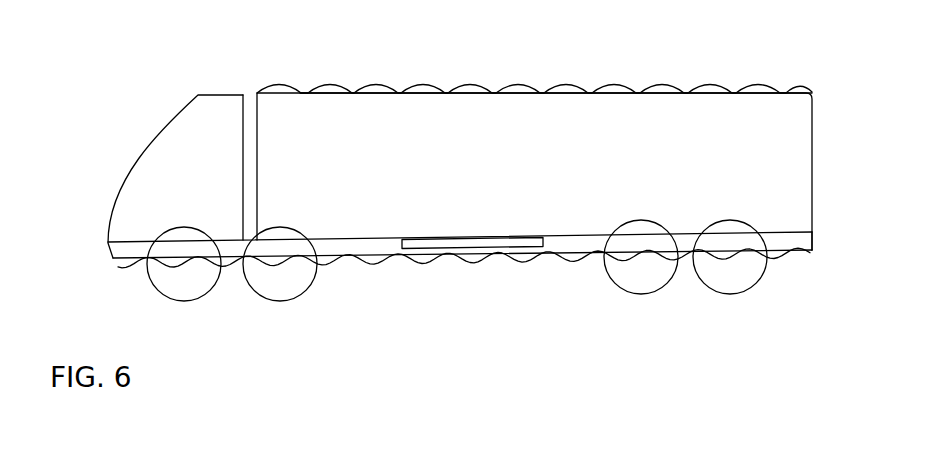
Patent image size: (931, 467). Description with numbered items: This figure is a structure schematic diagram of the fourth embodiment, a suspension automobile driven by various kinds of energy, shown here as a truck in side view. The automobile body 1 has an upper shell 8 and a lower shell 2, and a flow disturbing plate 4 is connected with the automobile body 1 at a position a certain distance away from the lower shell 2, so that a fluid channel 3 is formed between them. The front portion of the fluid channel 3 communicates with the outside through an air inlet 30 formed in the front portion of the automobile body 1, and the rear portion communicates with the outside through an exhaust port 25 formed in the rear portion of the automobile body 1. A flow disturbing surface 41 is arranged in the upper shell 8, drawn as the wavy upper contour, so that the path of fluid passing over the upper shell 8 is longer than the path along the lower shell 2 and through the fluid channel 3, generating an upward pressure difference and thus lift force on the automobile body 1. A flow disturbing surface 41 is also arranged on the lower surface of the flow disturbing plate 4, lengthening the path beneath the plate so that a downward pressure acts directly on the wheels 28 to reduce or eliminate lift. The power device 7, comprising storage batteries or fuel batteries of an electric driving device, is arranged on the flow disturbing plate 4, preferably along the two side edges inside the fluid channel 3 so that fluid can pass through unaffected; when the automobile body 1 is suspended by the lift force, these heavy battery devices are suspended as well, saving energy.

The automobile body 1 is at (657, 132).
The lower shell 2 is at (575, 238).
The fluid channel 3 is at (387, 245).
The flow disturbing plate 4 is at (460, 253).
The power device 7 is at (523, 245).
The upper shell 8 is at (408, 93).
The flow disturbing surface 41 is at (512, 87).
The exhaust port 25 is at (812, 243).
The wheel 28 is at (193, 302).
The air inlet 30 is at (110, 252).